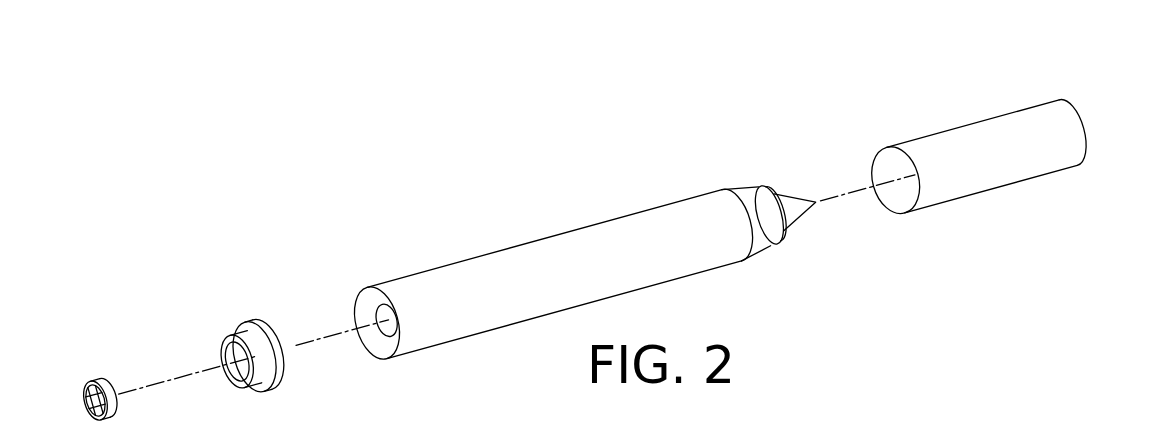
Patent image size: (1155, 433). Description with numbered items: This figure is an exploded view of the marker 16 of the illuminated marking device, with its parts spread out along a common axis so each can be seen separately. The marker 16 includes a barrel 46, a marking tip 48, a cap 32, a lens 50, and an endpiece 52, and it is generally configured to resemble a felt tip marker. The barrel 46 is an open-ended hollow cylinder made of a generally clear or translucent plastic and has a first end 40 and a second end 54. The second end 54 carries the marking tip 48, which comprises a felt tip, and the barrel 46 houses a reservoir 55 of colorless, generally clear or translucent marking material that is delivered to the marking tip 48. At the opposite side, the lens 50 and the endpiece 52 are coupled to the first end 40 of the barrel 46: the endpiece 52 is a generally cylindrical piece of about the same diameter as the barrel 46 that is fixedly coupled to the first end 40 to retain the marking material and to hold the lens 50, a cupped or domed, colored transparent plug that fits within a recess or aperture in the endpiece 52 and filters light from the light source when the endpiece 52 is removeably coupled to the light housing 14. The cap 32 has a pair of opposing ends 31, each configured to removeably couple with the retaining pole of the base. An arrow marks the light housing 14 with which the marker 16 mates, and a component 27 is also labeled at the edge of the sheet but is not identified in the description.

The light housing 14 is at (1105, 424).
The marker 16 is at (591, 269).
The component 27 is at (1025, 428).
The opposing ends 31 is at (873, 157).
The cap 32 is at (972, 122).
The first end 40 is at (393, 357).
The barrel 46 is at (655, 285).
The marking tip 48 is at (787, 195).
The lens 50 is at (103, 383).
The endpiece 52 is at (255, 322).
The second end 54 is at (770, 241).
The reservoir 55 is at (378, 333).